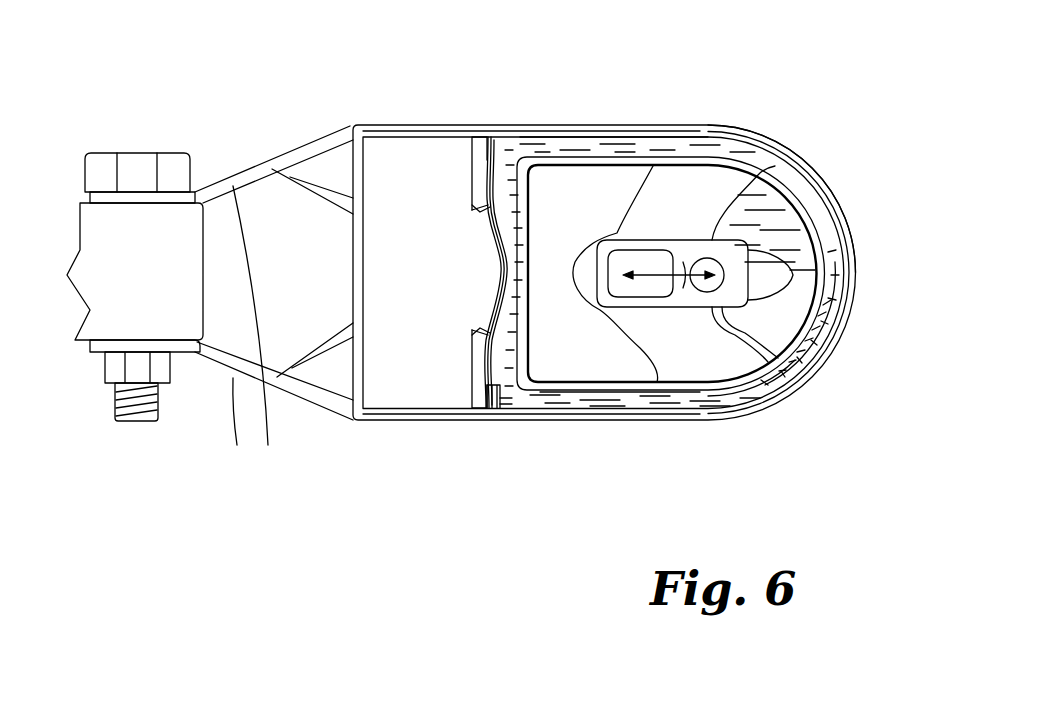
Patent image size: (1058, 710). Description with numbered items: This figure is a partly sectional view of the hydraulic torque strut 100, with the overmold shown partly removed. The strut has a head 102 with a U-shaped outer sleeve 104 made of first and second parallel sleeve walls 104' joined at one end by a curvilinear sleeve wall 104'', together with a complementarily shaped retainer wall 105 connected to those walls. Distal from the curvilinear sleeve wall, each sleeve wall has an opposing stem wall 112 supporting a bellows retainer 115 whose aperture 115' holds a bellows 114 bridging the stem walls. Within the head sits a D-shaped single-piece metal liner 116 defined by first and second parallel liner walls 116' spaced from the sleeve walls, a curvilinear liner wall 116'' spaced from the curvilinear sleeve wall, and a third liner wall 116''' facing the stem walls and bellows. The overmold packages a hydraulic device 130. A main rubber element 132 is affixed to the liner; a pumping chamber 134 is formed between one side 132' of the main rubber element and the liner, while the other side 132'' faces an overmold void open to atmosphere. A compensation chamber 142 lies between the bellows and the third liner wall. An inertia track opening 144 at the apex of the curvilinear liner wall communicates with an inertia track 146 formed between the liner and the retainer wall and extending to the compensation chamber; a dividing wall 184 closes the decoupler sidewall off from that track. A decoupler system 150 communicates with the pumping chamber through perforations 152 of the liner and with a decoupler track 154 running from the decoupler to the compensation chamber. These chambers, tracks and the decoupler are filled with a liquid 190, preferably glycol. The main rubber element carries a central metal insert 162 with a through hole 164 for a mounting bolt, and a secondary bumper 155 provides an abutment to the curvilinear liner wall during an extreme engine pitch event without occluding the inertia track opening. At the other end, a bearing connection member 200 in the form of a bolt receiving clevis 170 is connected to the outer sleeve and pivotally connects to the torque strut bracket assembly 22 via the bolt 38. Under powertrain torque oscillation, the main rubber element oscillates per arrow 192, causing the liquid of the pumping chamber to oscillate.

The hydraulic torque strut 100 is at (736, 95).
The head 102 is at (781, 136).
The outer sleeve 104 is at (532, 464).
The sleeve walls 104' is at (531, 276).
The curvilinear sleeve wall 104'' is at (790, 267).
The retainer wall 105 is at (651, 137).
The stem walls 112 is at (472, 180).
The bellows 114 is at (498, 268).
The bellows retainer 115 is at (436, 341).
The aperture 115' is at (436, 230).
The metal liner 116 is at (645, 439).
The liner walls 116' is at (671, 277).
The curvilinear liner wall 116'' is at (788, 207).
The third liner wall 116''' is at (672, 273).
The hydraulic device 130 is at (746, 134).
The main rubber element 132 is at (595, 274).
The one side of main rubber element 132' is at (746, 399).
The other side of main rubber element 132'' is at (637, 408).
The pumping chamber 134 is at (775, 210).
The compensation chamber 142 is at (507, 355).
The inertia track opening 144 is at (831, 262).
The inertia track 146 is at (608, 150).
The decoupler system 150 is at (807, 383).
The perforations 152 is at (825, 325).
The decoupler track 154 is at (602, 402).
The secondary bumper 155 is at (812, 292).
The metal insert 162 is at (643, 343).
The through hole 164 is at (707, 258).
The bolt receiving clevis 170 is at (253, 338).
The dividing wall 184 is at (806, 383).
The liquid 190 is at (518, 400).
The arrow 192 is at (684, 285).
The bearing connection member 200 is at (220, 147).
The torque strut bracket assembly 22 is at (207, 352).
The bolt 38 is at (167, 153).